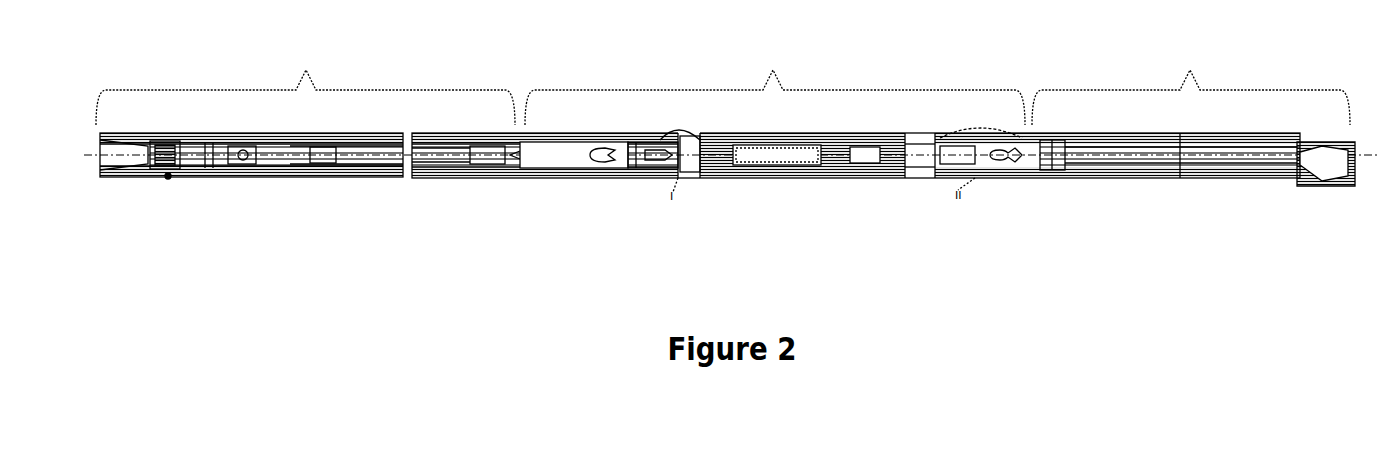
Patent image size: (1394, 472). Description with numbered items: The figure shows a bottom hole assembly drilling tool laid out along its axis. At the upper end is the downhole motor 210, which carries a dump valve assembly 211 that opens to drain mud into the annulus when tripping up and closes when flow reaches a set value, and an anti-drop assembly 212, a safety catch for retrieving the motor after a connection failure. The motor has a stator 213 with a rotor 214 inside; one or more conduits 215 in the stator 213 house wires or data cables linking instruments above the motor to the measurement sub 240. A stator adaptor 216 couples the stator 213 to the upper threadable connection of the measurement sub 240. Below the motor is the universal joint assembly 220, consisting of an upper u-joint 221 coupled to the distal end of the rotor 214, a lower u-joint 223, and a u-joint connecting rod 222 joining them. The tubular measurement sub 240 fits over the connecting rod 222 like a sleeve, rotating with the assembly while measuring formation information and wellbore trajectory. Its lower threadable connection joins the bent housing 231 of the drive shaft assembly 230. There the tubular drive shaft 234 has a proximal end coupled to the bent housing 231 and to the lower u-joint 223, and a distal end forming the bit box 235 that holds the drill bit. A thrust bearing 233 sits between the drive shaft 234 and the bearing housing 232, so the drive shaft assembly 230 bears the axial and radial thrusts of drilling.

The downhole motor 210 is at (306, 70).
The dump valve assembly 211 is at (146, 134).
The anti-drop assembly 212 is at (256, 134).
The stator 213 is at (378, 134).
The rotor 214 is at (436, 134).
The conduit 215 is at (480, 134).
The stator adaptor 216 is at (543, 134).
The universal joint assembly 220 is at (773, 70).
The upper u-joint 221 is at (612, 134).
The u-joint connecting rod 222 is at (682, 132).
The lower u-joint 223 is at (1000, 134).
The measurement sub 240 is at (803, 141).
The drive shaft assembly 230 is at (1190, 70).
The bent housing 231 is at (1064, 134).
The bearing housing 232 is at (1150, 134).
The thrust bearing 233 is at (1210, 134).
The tubular drive shaft 234 is at (1312, 140).
The bit box 235 is at (1345, 148).